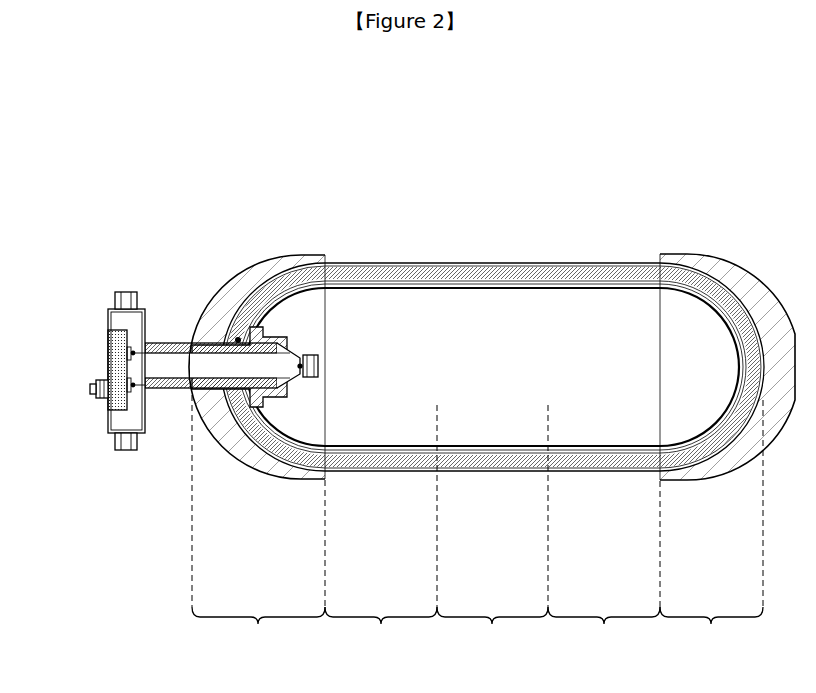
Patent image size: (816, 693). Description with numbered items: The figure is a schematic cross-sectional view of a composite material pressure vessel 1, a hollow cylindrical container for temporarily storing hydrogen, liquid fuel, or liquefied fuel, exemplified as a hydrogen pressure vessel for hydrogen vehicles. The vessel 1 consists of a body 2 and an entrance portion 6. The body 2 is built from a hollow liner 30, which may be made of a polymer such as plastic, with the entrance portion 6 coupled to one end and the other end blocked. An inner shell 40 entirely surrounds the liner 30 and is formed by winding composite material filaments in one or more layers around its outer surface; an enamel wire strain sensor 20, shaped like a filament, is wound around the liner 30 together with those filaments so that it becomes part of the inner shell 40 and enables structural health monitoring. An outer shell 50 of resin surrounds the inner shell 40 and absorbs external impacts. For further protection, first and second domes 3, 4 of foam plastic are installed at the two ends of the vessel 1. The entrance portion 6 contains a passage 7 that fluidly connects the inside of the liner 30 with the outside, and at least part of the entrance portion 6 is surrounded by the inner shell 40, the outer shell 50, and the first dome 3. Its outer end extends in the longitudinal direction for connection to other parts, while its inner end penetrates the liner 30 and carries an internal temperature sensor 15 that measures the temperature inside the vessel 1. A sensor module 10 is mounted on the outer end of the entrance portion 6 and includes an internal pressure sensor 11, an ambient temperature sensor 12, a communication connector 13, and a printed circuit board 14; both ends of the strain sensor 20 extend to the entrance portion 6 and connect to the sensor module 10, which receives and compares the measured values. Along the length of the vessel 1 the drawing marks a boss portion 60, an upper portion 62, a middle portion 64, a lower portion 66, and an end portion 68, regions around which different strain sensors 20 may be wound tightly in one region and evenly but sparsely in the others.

The composite material pressure vessel 1 is at (398, 99).
The body 2 is at (455, 253).
The first dome 3 is at (265, 262).
The second dome 4 is at (735, 278).
The entrance portion 6 is at (163, 325).
The passage 7 is at (182, 365).
The sensor module 10 is at (92, 377).
The internal pressure sensor 11 is at (125, 292).
The ambient temperature sensor 12 is at (125, 450).
The communication connector 13 is at (100, 396).
The printed circuit board 14 is at (103, 341).
The internal temperature sensor 15 is at (303, 372).
The strain sensor 20 is at (540, 270).
The liner 30 is at (474, 435).
The inner shell 40 is at (584, 462).
The outer shell 50 is at (602, 262).
The boss portion 60 is at (258, 632).
The upper portion 62 is at (381, 632).
The middle portion 64 is at (492, 632).
The lower portion 66 is at (604, 632).
The end portion 68 is at (711, 632).